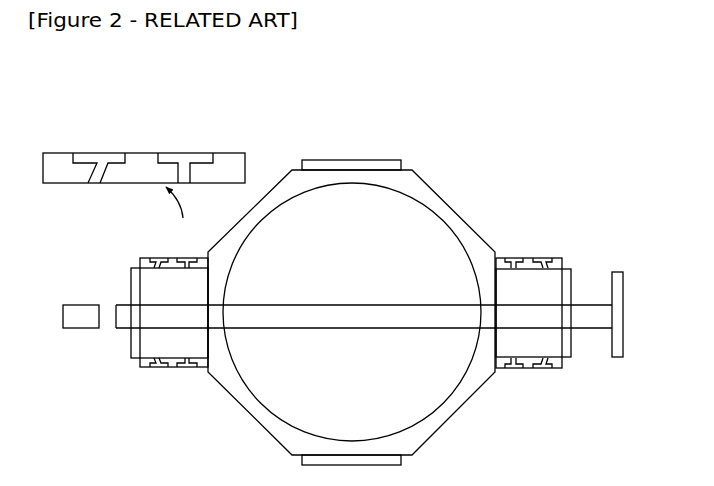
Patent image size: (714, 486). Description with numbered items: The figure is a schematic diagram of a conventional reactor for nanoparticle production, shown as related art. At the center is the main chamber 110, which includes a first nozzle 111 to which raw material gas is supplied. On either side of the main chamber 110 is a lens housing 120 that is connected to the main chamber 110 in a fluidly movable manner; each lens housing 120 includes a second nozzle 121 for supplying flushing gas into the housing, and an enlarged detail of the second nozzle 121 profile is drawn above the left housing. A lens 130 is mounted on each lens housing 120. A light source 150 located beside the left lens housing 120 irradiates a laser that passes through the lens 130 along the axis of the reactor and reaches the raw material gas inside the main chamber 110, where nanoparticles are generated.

The main chamber 110 is at (284, 124).
The first nozzle 111 is at (407, 243).
The lens housing 120 is at (170, 382).
The second nozzle 121 is at (146, 248).
The lens 130 is at (130, 348).
The light source 150 is at (83, 303).